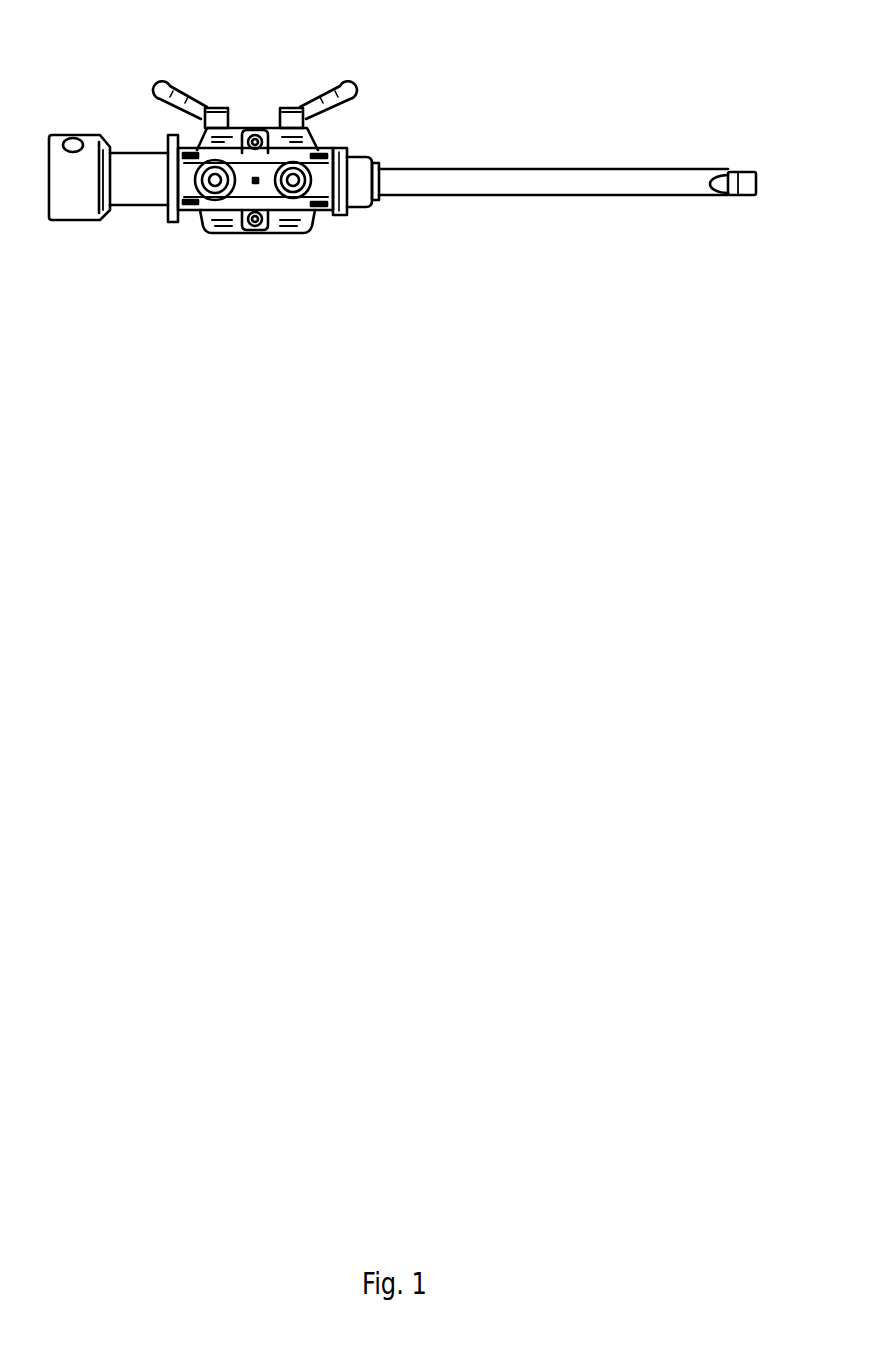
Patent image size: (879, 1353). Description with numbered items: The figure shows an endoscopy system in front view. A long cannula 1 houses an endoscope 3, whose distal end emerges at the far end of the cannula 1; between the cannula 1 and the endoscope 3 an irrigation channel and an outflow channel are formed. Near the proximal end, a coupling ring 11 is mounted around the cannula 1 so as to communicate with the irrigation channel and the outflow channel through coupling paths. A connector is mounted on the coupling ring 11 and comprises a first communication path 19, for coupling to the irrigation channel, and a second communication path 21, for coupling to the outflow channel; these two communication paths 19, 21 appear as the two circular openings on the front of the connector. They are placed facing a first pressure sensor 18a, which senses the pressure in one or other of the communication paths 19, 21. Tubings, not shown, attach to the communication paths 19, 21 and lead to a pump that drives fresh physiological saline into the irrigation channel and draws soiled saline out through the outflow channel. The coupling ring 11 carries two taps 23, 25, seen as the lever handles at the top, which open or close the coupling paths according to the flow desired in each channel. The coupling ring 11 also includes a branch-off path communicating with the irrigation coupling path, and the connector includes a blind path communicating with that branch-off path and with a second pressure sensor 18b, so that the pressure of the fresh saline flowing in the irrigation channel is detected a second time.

The cannula 1 is at (520, 187).
The endoscope 3 is at (735, 172).
The coupling ring 11 is at (340, 150).
The first pressure sensor 18a is at (237, 128).
The second pressure sensor 18b is at (283, 232).
The first communication path 19 is at (205, 225).
The second communication path 21 is at (310, 225).
The tap 23 is at (172, 82).
The tap 25 is at (350, 88).